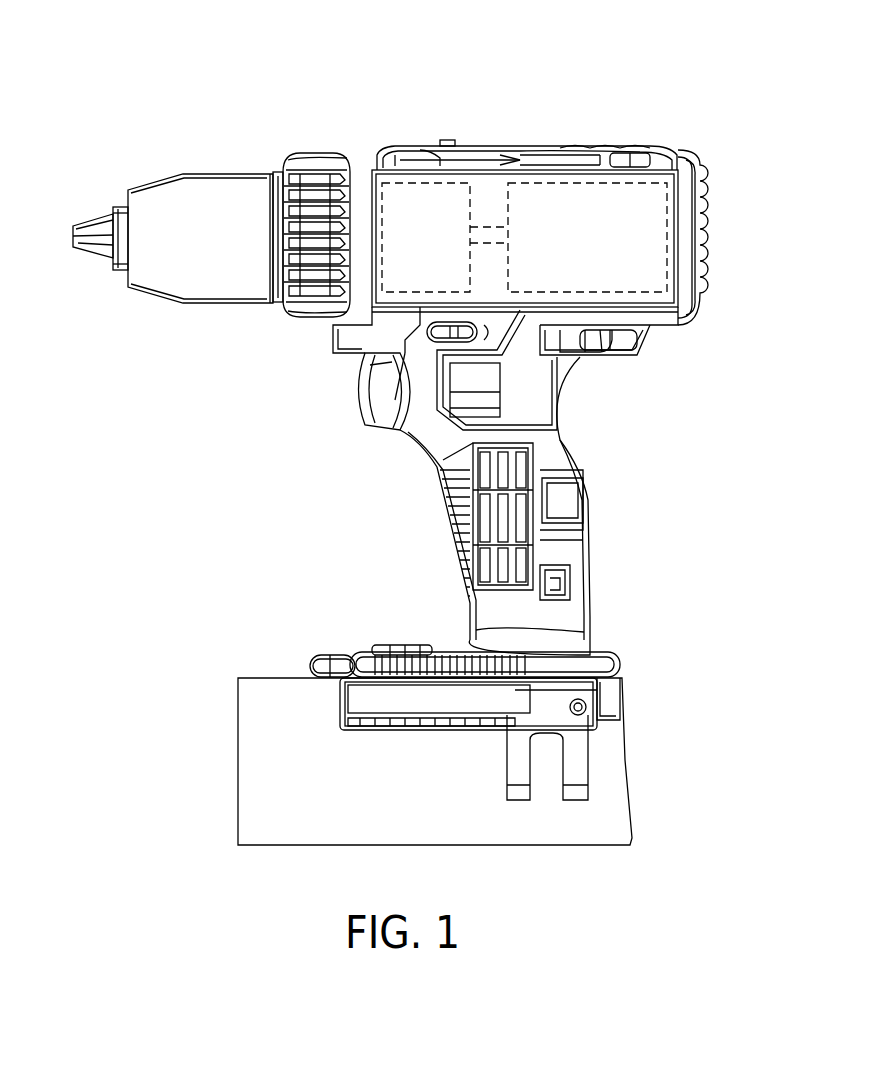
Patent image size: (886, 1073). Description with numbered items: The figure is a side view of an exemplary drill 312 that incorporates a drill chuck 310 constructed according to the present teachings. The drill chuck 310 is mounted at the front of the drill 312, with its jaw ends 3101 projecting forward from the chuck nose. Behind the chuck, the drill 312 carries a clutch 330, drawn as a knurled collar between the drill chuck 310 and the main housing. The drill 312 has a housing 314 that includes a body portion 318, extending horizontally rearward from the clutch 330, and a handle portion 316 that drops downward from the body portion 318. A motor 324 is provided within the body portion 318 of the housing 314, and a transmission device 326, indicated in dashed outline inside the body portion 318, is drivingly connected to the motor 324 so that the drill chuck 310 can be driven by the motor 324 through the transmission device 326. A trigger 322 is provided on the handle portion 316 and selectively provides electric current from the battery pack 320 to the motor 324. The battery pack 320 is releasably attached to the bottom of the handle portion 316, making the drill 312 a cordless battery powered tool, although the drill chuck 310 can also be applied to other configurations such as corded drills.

The drill chuck 310 is at (196, 140).
The chuck jaws 3101 is at (84, 232).
The clutch 330 is at (312, 153).
The drill 312 is at (682, 104).
The body portion 318 is at (552, 143).
The motor 324 is at (705, 232).
The transmission device 326 is at (425, 177).
The trigger 322 is at (378, 390).
The housing 314 is at (617, 340).
The handle portion 316 is at (573, 497).
The battery pack 320 is at (260, 758).